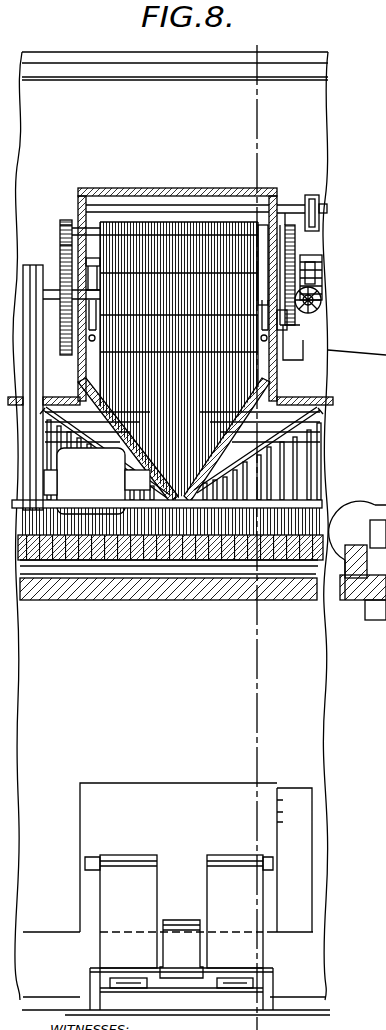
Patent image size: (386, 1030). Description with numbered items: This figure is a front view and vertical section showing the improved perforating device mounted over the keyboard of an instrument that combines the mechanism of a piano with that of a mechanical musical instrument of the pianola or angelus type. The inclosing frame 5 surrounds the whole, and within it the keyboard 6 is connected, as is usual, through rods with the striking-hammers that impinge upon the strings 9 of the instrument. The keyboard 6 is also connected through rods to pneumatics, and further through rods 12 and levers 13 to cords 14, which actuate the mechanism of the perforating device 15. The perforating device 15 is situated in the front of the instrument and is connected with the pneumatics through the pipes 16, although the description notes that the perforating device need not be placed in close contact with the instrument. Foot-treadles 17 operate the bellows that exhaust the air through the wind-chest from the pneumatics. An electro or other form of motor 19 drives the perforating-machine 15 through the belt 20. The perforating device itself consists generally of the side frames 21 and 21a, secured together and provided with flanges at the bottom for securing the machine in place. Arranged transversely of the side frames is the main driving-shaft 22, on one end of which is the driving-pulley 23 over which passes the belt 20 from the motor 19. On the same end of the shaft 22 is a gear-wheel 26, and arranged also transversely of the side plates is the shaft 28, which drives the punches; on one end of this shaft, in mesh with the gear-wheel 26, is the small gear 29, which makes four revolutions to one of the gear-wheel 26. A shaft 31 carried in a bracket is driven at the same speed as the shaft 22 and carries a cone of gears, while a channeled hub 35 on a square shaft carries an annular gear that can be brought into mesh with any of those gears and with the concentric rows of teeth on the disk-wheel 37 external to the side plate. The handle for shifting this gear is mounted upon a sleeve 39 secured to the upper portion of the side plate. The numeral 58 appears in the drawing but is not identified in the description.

The inclosing frame 5 is at (333, 738).
The keyboard 6 is at (162, 553).
The strings 9 is at (257, 529).
The rods 12 is at (292, 465).
The levers 13 is at (140, 416).
The cords 14 is at (178, 326).
The perforating device 15 is at (177, 361).
The pipes 16 is at (315, 498).
The foot-treadles 17 is at (176, 899).
The motor 19 is at (97, 481).
The belt 20 is at (30, 374).
The side frame 21 is at (280, 192).
The side frame 21a is at (92, 200).
The main driving-shaft 22 is at (282, 310).
The driving-pulley 23 is at (53, 300).
The gear-wheel 26 is at (62, 268).
The shaft 28 is at (84, 234).
The small gear 29 is at (65, 222).
The shaft 31 is at (321, 304).
The channeled hub 35 is at (328, 278).
The disk-wheel 37 is at (292, 237).
The sleeve 39 is at (322, 213).
The bracket 58 is at (357, 341).